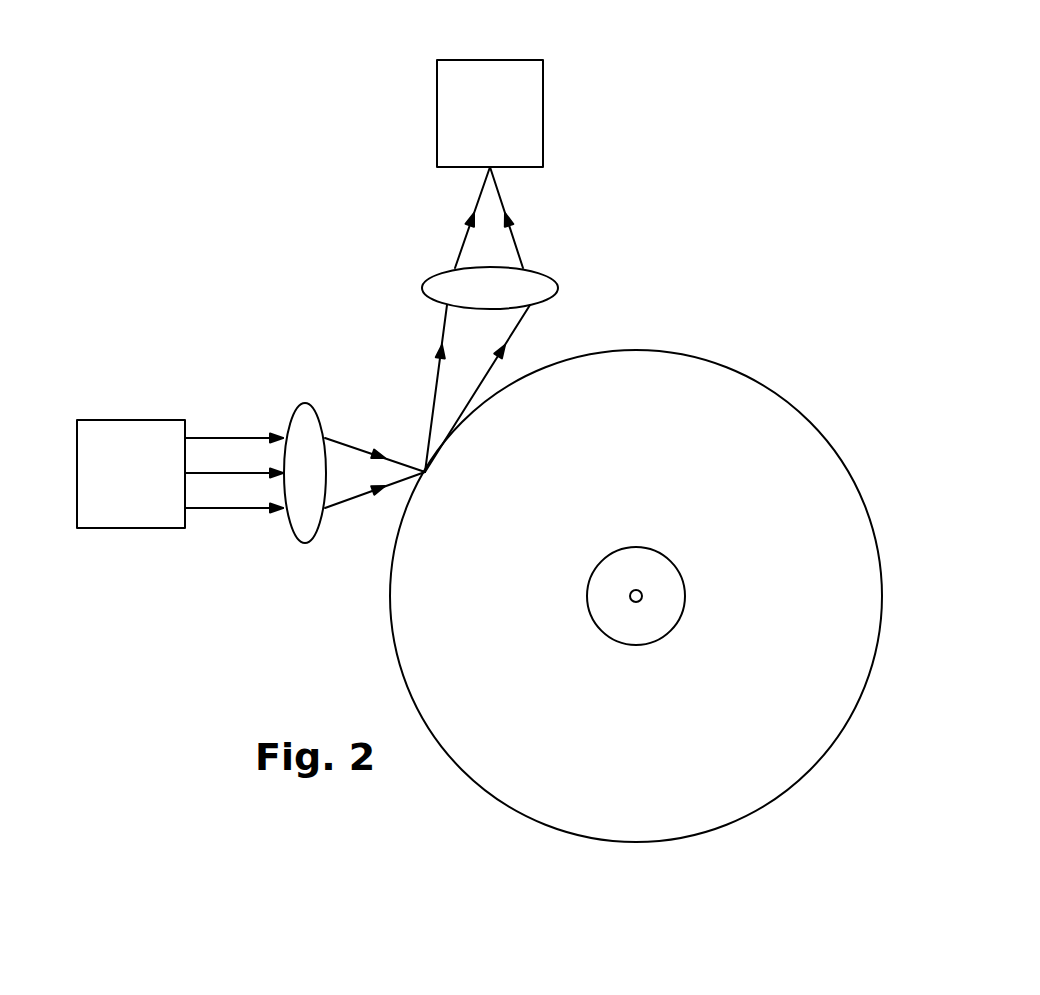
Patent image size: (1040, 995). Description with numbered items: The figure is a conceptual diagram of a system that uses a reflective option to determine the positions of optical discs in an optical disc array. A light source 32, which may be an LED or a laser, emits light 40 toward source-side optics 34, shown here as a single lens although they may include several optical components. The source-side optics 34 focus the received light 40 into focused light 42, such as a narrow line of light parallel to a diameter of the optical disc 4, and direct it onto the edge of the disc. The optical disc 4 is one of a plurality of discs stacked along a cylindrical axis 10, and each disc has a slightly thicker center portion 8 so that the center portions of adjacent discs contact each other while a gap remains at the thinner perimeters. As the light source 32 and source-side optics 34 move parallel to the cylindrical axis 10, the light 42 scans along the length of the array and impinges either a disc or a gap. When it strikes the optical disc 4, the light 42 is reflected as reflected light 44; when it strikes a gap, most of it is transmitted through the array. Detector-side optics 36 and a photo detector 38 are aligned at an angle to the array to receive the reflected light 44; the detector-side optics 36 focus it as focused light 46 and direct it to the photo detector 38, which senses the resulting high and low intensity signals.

The optical disc 4 is at (875, 663).
The center portion 8 is at (686, 608).
The cylindrical axis 10 is at (636, 596).
The light source 32 is at (92, 420).
The source-side optics 34 is at (308, 403).
The detector-side optics 36 is at (558, 290).
The photo detector 38 is at (543, 122).
The light 40 is at (223, 438).
The focused light 42 is at (367, 452).
The reflected light 44 is at (440, 358).
The focused light 46 is at (468, 232).